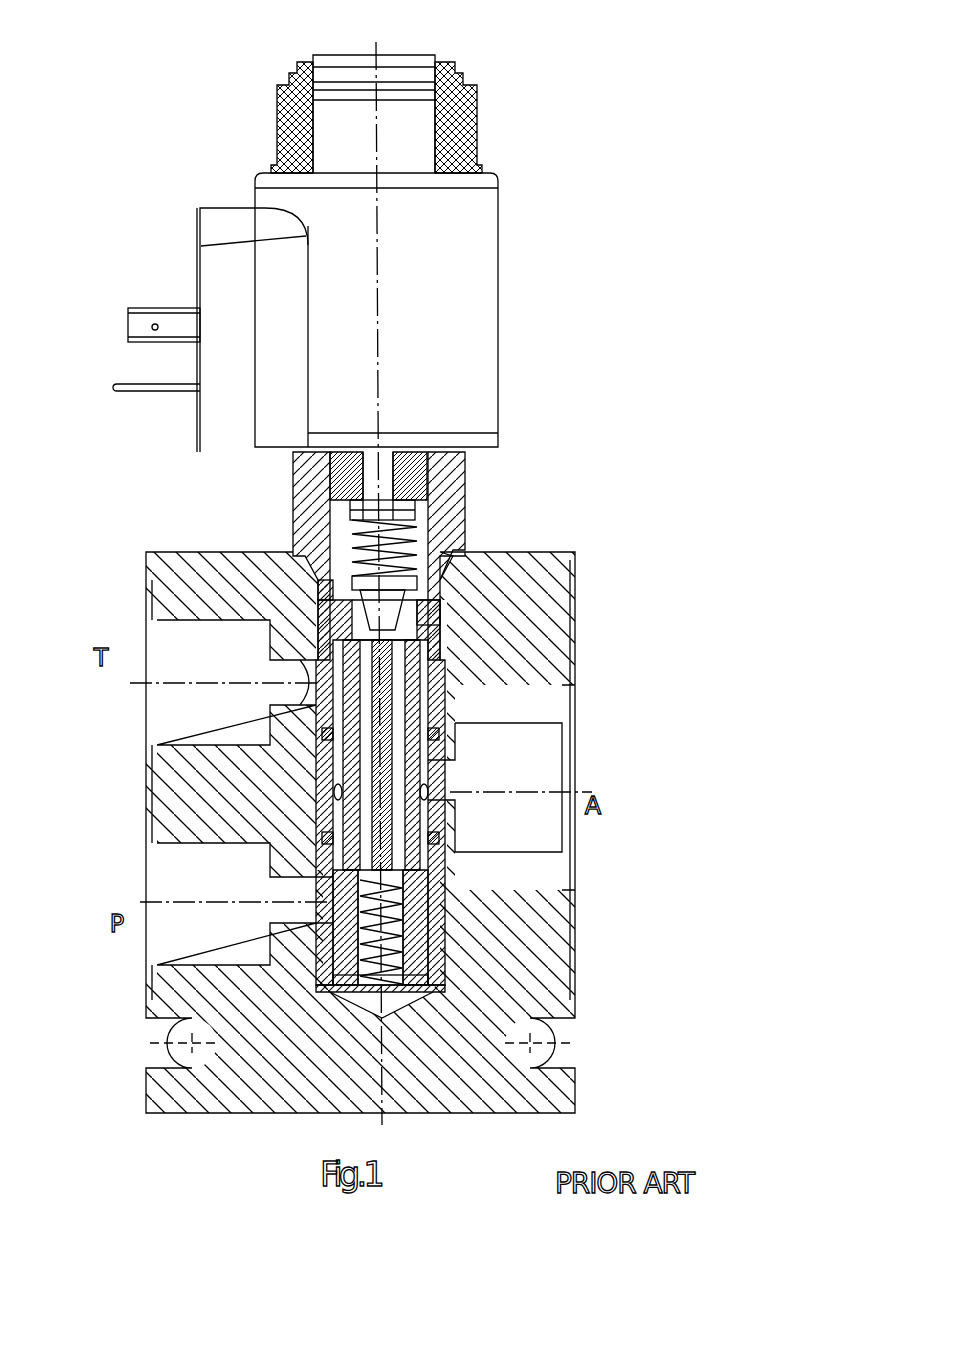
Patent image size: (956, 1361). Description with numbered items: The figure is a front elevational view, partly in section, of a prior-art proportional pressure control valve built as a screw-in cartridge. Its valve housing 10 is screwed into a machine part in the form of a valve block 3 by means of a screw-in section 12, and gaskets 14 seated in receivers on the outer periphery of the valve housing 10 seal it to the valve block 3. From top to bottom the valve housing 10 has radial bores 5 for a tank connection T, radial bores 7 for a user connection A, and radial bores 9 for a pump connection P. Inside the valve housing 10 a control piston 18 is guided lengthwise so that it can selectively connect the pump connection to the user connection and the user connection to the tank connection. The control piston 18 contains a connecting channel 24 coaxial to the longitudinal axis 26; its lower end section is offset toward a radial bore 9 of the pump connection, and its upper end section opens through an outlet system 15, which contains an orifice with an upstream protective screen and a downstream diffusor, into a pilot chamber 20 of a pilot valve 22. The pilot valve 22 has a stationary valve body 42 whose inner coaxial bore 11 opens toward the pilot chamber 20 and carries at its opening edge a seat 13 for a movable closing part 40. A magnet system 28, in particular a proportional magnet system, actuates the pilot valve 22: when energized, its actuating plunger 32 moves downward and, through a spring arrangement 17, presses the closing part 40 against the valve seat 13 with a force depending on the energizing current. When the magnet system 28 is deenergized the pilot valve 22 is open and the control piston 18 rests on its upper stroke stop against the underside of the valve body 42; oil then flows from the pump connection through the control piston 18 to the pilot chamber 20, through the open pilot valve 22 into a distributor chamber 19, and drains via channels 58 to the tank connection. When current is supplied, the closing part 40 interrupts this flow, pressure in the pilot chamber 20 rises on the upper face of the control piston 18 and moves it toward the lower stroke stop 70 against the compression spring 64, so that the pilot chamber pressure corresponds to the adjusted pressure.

The valve block 3 is at (577, 632).
The radial bores 5 is at (475, 700).
The radial bores 7 is at (458, 772).
The radial bores 9 is at (440, 903).
The valve housing 10 is at (317, 507).
The inner coaxial bore 11 is at (498, 573).
The screw-in section 12 is at (320, 625).
The valve seat 13 is at (458, 548).
The gaskets 14 is at (447, 556).
The outlet system 15 is at (325, 695).
The spring arrangement 17 is at (335, 585).
The control piston 18 is at (358, 740).
The distributor chamber 19 is at (462, 556).
The pilot chamber 20 is at (448, 625).
The pilot valve 22 is at (440, 600).
The connecting channel 24 is at (448, 766).
The longitudinal axis 26 is at (380, 262).
The magnet system 28 is at (452, 312).
The actuating plunger 32 is at (377, 468).
The movable closing part 40 is at (335, 568).
The stationary valve body 42 is at (317, 672).
The channels 58 is at (505, 640).
The compression spring 64 is at (343, 928).
The lower stroke stop 70 is at (330, 968).